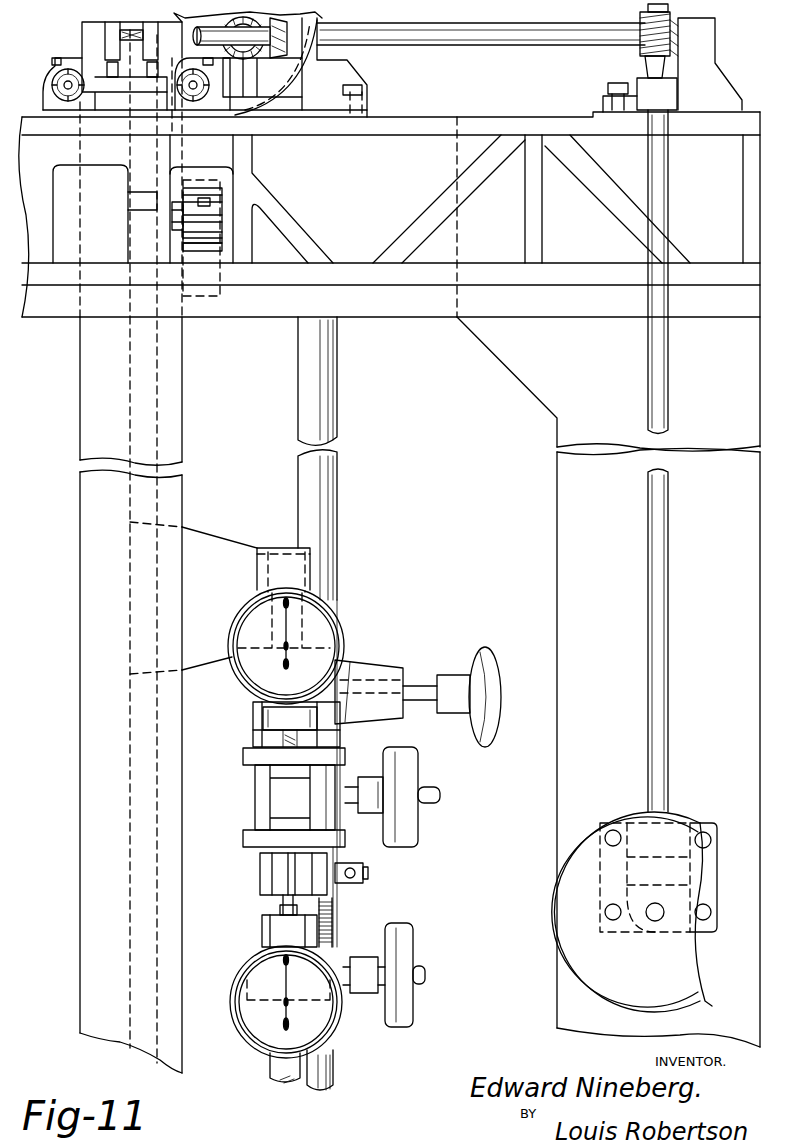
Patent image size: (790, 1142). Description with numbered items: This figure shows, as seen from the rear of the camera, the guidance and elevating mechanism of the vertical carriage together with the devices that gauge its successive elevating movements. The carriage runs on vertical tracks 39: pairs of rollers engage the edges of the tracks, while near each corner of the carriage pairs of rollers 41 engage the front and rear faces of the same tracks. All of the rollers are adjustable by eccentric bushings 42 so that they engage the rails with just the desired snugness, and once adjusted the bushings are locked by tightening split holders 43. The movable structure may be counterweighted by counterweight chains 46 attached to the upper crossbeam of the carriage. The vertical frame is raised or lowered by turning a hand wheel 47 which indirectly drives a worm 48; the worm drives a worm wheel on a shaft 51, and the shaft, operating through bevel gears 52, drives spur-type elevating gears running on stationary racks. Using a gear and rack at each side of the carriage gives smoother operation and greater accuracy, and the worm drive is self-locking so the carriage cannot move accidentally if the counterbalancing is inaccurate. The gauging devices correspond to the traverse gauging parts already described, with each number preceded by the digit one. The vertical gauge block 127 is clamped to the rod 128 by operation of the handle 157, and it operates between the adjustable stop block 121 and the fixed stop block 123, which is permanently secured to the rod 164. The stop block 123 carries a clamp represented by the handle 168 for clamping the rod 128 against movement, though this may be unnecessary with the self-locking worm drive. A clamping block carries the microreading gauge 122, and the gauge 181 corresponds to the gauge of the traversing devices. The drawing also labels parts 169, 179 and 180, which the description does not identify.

The vertical tracks 39 is at (182, 399).
The rollers 41 is at (183, 195).
The eccentric bushings 42 is at (52, 86).
The split holders 43 is at (50, 68).
The counterweight chains 46 is at (107, 37).
The hand wheel 47 is at (580, 958).
The worm 48 is at (640, 50).
The shaft 51 is at (428, 48).
The bevel gears 52 is at (273, 44).
The adjustable stop block 121 is at (268, 880).
The microreading gauge 122 is at (257, 1027).
The fixed stop block 123 is at (352, 680).
The vertical gauge block 127 is at (275, 793).
The rod 128 is at (336, 1067).
The handle 157 is at (417, 828).
The rod 164 is at (272, 1068).
The handle 168 is at (471, 646).
The gauge clamp 169 is at (255, 698).
The stop block 179 is at (368, 876).
The clamp knob 180 is at (409, 942).
The gauge 181 is at (322, 615).